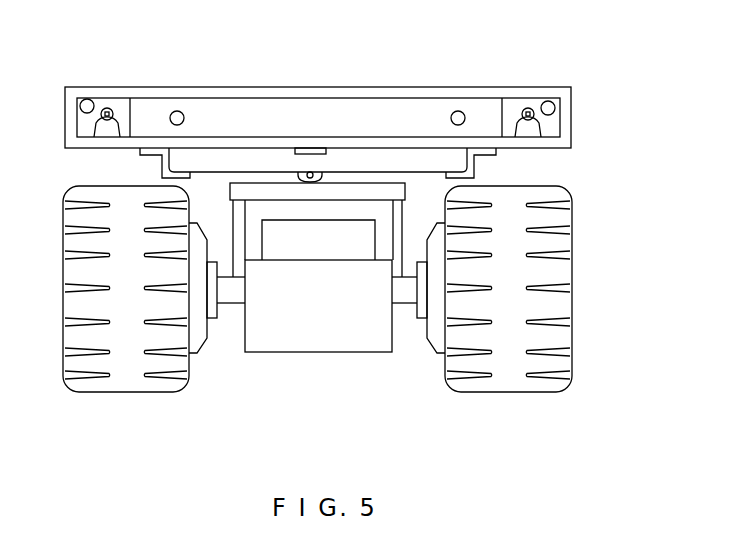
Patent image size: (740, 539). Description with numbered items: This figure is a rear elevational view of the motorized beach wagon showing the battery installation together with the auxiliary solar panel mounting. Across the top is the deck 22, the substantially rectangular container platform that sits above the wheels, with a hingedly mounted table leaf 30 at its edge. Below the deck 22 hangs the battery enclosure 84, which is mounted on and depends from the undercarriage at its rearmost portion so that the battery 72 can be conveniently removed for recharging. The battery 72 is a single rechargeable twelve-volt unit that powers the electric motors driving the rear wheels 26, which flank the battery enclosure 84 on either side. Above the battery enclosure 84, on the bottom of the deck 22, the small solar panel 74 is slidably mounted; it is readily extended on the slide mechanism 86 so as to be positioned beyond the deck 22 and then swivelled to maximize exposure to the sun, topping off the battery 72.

The table leaf 30 is at (545, 87).
The deck 22 is at (540, 148).
The auxiliary solar panel 74 is at (382, 158).
The slide mechanism 86 is at (307, 148).
The battery enclosure 84 is at (270, 353).
The battery 72 is at (350, 330).
The rear wheel 26 is at (127, 372).